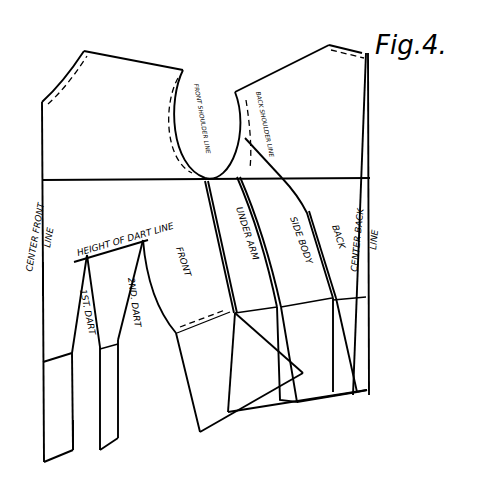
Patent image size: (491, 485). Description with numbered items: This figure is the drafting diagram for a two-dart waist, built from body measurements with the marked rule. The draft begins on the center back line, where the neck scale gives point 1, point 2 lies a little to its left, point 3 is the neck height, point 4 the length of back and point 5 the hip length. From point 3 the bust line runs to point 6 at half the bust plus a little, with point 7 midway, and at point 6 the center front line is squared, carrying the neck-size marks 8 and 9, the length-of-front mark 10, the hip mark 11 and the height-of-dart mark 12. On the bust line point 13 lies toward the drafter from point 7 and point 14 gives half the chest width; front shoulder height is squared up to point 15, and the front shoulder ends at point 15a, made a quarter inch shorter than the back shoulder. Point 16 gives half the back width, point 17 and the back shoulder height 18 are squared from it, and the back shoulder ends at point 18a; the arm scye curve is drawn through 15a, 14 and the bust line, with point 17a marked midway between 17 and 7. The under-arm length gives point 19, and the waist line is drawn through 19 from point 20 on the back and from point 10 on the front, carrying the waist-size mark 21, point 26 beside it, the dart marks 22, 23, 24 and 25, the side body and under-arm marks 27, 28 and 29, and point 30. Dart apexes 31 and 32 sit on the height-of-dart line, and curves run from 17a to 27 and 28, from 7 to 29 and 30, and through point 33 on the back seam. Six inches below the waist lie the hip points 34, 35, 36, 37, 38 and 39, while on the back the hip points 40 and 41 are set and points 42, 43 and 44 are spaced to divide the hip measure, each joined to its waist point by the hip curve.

The point 1 is at (344, 43).
The point 2 is at (361, 215).
The point 3 is at (294, 178).
The point 4 is at (358, 296).
The point 5 is at (298, 401).
The point 6 is at (123, 172).
The point 7 is at (218, 135).
The point 8 is at (48, 282).
The point 9 is at (68, 77).
The point 10 is at (57, 365).
The point 11 is at (58, 454).
The point 12 is at (53, 276).
The point 13 is at (205, 247).
The point 14 is at (183, 152).
The point 15 is at (182, 124).
The point 15a is at (150, 60).
The point 16 is at (260, 236).
The point 17 is at (254, 154).
The point 17a is at (244, 232).
The point 18 is at (249, 91).
The point 18a is at (271, 74).
The point 19 is at (202, 318).
The point 20 is at (361, 224).
The point 21 is at (342, 345).
The point 22 is at (68, 401).
The point 23 is at (103, 352).
The point 24 is at (130, 295).
The point 25 is at (171, 336).
The point 26 is at (322, 264).
The point 27 is at (306, 304).
The point 28 is at (256, 314).
The point 29 is at (232, 255).
The point 30 is at (203, 320).
The point 31 is at (91, 304).
The point 32 is at (119, 250).
The point 33 is at (311, 214).
The point 34 is at (67, 440).
The point 35 is at (109, 441).
The point 36 is at (128, 397).
The point 37 is at (251, 402).
The point 38 is at (240, 362).
The point 39 is at (289, 354).
The point 40 is at (360, 384).
The point 41 is at (333, 387).
The point 42 is at (298, 372).
The point 43 is at (314, 399).
The point 44 is at (346, 345).